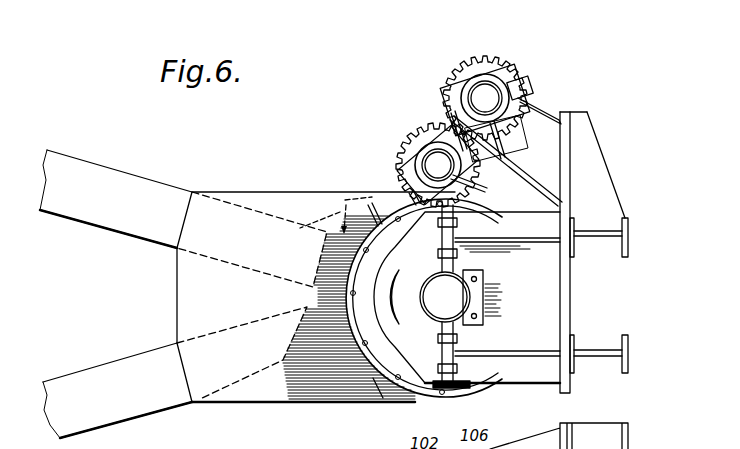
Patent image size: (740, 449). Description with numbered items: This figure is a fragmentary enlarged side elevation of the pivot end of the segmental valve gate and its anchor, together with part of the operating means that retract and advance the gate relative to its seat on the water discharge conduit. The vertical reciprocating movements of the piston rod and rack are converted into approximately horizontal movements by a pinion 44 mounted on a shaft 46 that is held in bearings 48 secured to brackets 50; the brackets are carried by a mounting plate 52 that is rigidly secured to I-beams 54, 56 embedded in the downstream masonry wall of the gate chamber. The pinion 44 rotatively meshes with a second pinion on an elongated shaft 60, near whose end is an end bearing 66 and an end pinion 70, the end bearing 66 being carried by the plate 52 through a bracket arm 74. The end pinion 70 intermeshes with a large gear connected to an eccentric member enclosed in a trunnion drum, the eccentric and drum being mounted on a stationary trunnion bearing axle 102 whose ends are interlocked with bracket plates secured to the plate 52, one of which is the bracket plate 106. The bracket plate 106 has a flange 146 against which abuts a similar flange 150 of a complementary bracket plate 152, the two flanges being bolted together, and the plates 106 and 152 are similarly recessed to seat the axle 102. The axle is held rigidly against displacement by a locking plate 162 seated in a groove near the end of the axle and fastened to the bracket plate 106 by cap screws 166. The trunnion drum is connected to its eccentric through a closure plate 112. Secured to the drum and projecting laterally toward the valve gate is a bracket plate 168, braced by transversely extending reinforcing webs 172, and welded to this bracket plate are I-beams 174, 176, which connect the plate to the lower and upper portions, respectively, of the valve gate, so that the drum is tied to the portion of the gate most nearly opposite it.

The pinion 44 is at (478, 58).
The bearings 48 is at (500, 78).
The shaft 46 is at (492, 102).
The brackets 50 is at (565, 115).
The mounting plate 52 is at (561, 148).
The I-beam 54 is at (630, 238).
The I-beam 56 is at (630, 356).
The elongated shaft 60 is at (436, 156).
The end bearing 66 is at (417, 162).
The end pinion 70 is at (398, 172).
The bracket arm 74 is at (506, 158).
The stationary trunnion bearing axle 102 is at (460, 280).
The bracket plate 106 is at (543, 276).
The locking plate 162 is at (484, 299).
The cap screws 166 is at (486, 318).
The complementary bracket plate 152 is at (407, 312).
The flange 146 is at (480, 388).
The flange 150 is at (446, 391).
The closure plate 112 is at (378, 398).
The reinforcing webs 172 is at (341, 215).
The I-beams 176 is at (116, 199).
The bracket plate 168 is at (316, 295).
The I-beams 174 is at (117, 390).